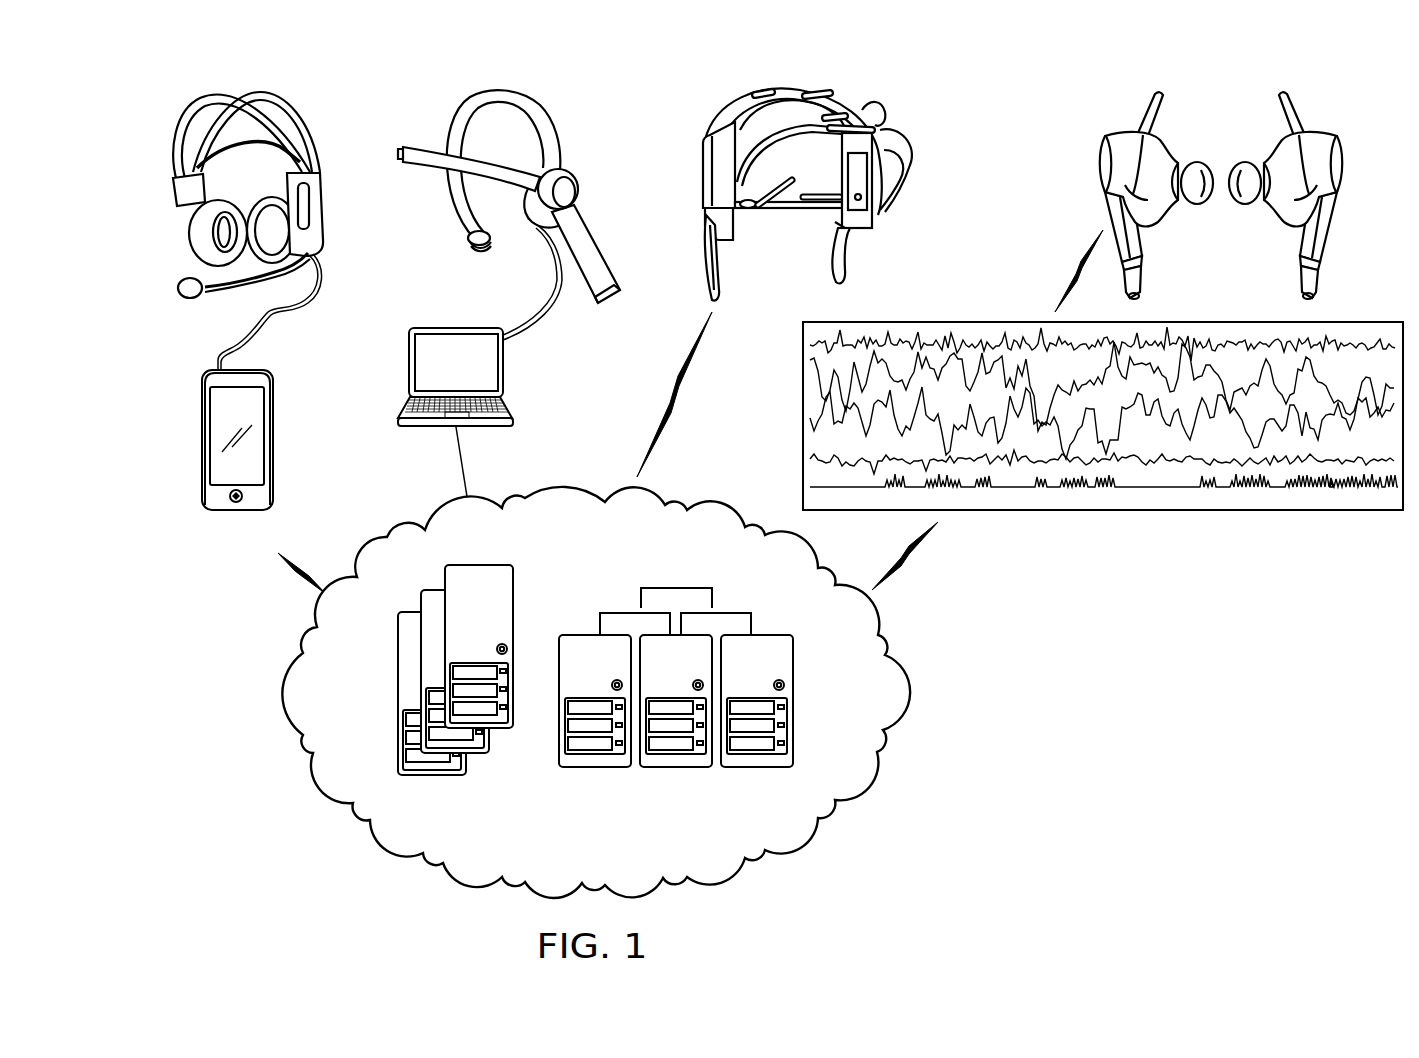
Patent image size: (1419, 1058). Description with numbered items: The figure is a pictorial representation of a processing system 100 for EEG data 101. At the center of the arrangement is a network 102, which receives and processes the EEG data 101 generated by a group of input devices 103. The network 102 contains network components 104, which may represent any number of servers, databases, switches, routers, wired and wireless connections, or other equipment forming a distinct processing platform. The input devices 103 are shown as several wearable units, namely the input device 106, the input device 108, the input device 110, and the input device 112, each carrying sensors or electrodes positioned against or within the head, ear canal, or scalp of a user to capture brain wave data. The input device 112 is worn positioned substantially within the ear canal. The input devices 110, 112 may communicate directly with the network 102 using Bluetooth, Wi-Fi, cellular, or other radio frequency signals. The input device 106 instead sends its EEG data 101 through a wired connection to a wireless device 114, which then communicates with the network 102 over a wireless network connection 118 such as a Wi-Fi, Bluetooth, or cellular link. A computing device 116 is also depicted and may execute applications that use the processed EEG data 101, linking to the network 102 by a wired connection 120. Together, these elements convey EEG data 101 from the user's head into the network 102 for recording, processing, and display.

The processing system 100 is at (1090, 720).
The EEG data 101 is at (1105, 512).
The network 102 is at (388, 538).
The input devices 103 is at (126, 103).
The network components 104 is at (386, 781).
The input device 106 is at (266, 93).
The input device 108 is at (518, 95).
The input device 110 is at (862, 98).
The input device 112 is at (1315, 128).
The wireless device 114 is at (202, 440).
The computing device 116 is at (409, 362).
The wireless network connection 118 is at (662, 433).
The wired connection 120 is at (457, 462).